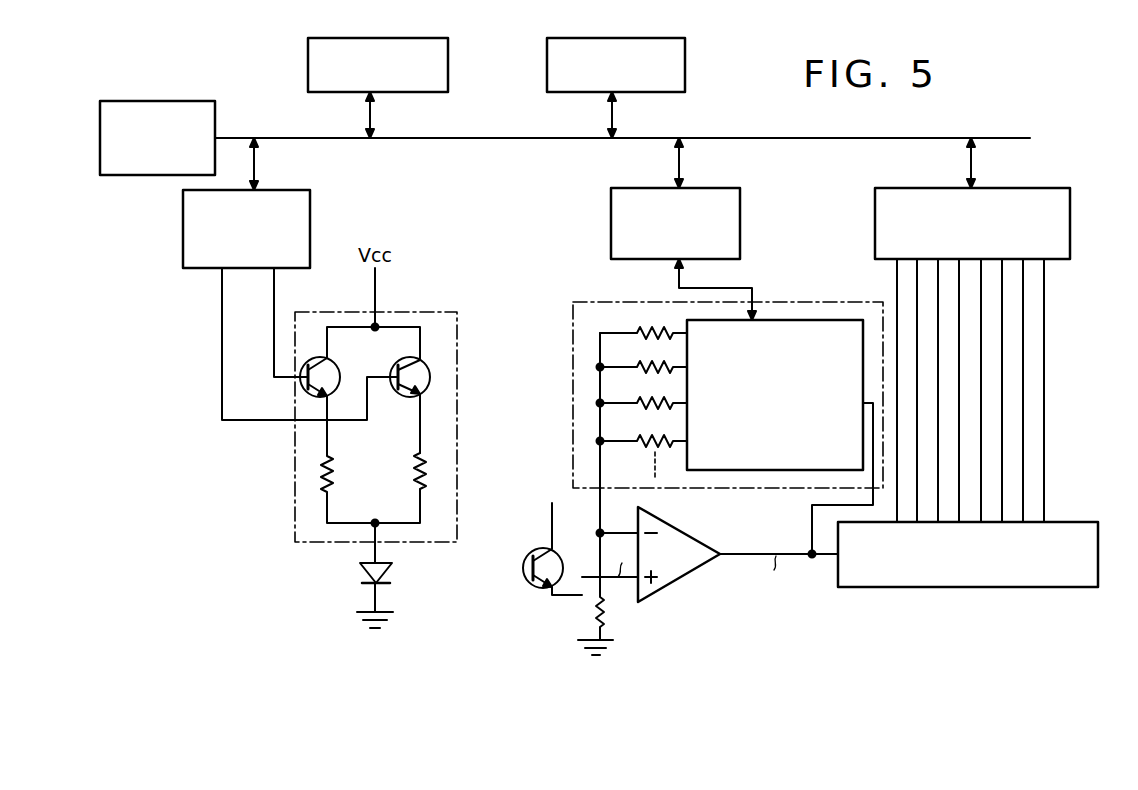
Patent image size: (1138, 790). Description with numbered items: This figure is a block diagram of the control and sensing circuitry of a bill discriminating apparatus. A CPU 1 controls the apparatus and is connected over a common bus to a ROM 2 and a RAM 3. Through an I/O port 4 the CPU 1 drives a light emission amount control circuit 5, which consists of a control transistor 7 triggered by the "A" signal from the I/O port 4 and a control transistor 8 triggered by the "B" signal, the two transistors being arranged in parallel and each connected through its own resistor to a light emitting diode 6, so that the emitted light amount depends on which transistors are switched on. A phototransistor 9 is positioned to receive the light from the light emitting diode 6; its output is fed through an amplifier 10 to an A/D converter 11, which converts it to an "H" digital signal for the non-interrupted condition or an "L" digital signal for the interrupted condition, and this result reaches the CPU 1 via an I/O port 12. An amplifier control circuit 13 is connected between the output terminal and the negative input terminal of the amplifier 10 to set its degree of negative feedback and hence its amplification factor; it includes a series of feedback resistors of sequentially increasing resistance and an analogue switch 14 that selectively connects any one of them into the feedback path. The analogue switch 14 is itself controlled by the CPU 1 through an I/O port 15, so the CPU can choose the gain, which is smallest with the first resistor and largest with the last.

The CPU 1 is at (194, 101).
The ROM 2 is at (448, 73).
The RAM 3 is at (685, 72).
The I/O port 4 is at (310, 207).
The light emission amount control circuit 5 is at (396, 426).
The light emitting diode 6 is at (392, 570).
The control transistor 7 is at (338, 372).
The control transistor 8 is at (430, 386).
The phototransistor 9 is at (522, 585).
The amplifier 10 is at (683, 578).
The A/D converter 11 is at (940, 587).
The I/O port 12 is at (1070, 208).
The amplifier control circuit 13 is at (728, 404).
The analogue switch 14 is at (772, 318).
The I/O port 15 is at (740, 212).